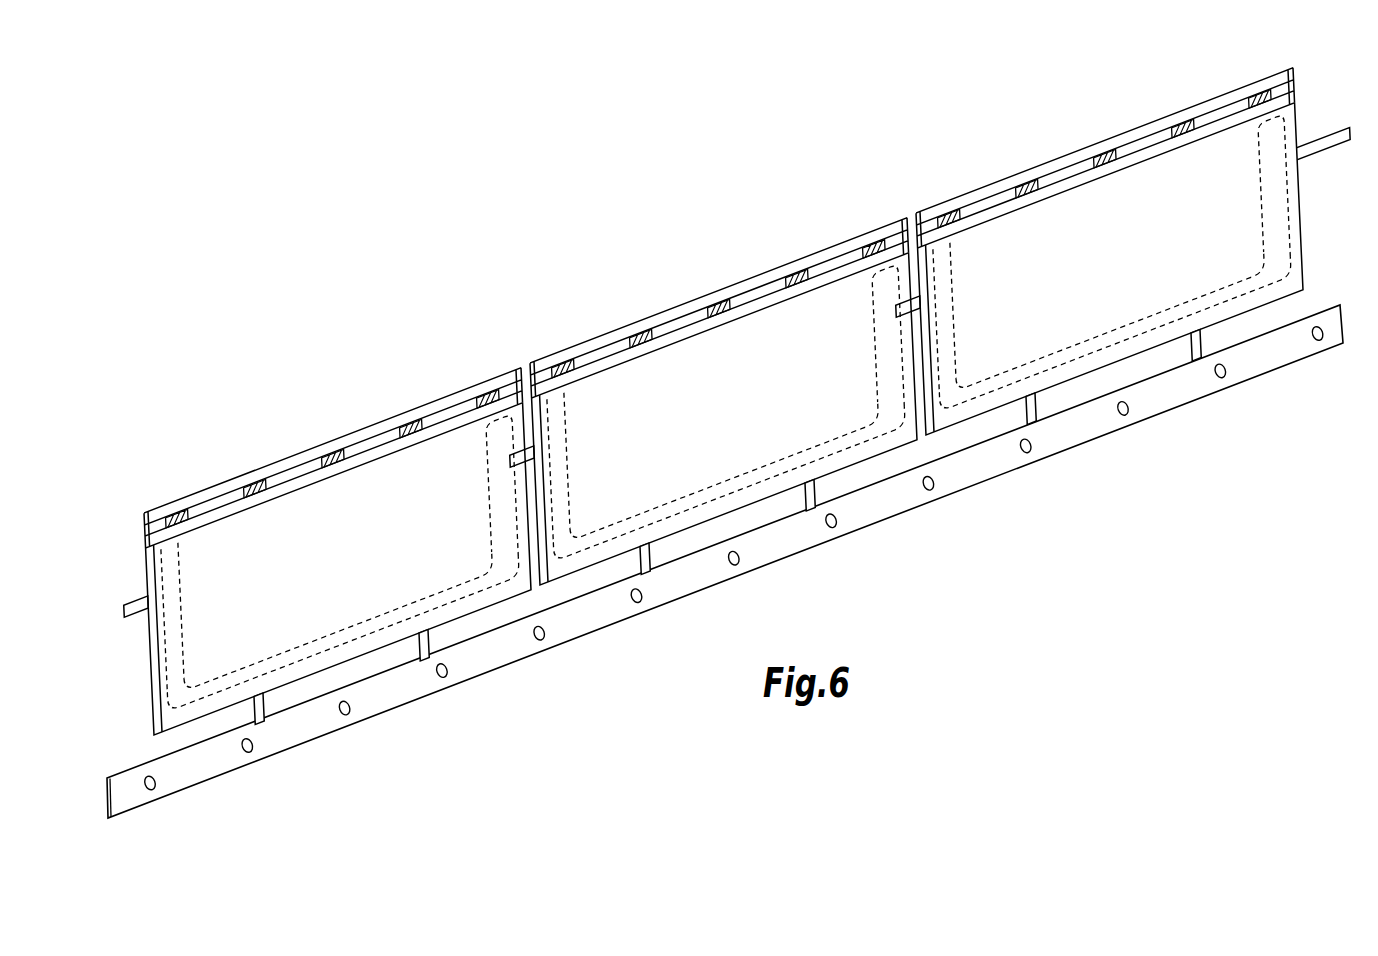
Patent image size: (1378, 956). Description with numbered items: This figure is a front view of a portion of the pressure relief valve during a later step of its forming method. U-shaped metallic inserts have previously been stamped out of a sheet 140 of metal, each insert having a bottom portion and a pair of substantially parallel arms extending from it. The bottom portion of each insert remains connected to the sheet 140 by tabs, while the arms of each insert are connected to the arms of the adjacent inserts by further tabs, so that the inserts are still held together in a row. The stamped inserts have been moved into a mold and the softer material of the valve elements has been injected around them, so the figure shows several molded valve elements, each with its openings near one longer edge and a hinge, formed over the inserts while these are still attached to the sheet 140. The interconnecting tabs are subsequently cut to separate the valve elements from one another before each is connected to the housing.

The sheet 140 is at (893, 500).